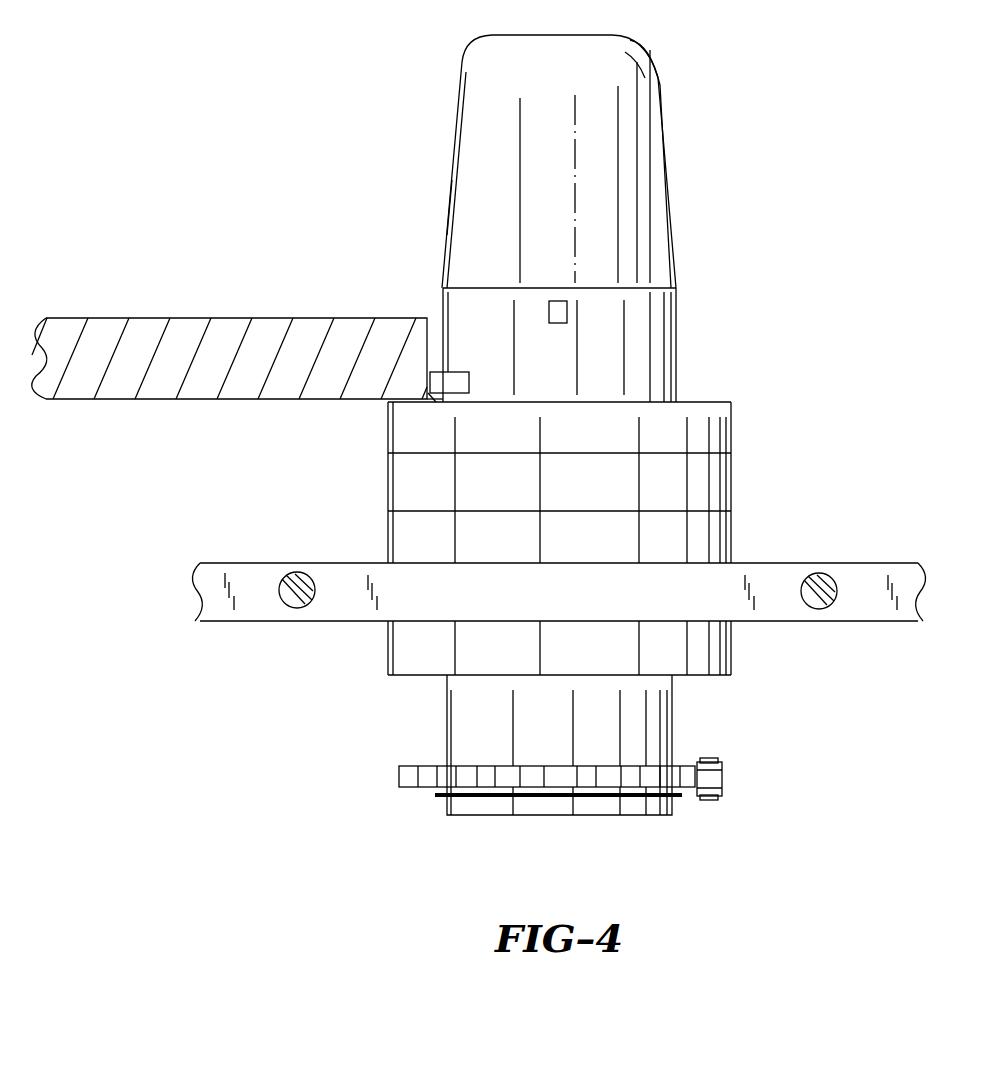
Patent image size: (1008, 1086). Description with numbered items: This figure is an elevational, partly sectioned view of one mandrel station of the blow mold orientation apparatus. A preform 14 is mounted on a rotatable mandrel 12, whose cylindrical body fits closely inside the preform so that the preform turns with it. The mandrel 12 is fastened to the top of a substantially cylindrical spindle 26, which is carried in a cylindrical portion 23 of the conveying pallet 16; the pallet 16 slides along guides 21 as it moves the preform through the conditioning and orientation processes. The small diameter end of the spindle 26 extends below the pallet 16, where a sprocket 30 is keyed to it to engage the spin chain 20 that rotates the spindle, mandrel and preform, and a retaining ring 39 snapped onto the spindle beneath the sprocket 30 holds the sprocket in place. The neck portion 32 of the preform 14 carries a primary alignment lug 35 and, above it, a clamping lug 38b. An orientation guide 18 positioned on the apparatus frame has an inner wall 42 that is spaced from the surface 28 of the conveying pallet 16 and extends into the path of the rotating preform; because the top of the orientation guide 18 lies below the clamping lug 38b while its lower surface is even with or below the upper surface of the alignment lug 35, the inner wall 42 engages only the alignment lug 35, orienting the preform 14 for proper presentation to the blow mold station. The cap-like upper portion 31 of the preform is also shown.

The rotatable mandrel 12 is at (731, 426).
The preform 14 is at (650, 108).
The conveying pallet 16 is at (868, 608).
The orientation guide 18 is at (232, 318).
The spin chain 20 is at (722, 762).
The guide 21 is at (820, 607).
The cylindrical portion 23 is at (387, 533).
The spindle 26 is at (387, 483).
The surface of conveying pallet 28 is at (800, 563).
The sprocket 30 is at (399, 776).
The cap side wall 31 is at (447, 220).
The neck portion 32 is at (676, 350).
The primary alignment lug 35 is at (428, 397).
The clamping lug 38b is at (567, 312).
The retaining ring 39 is at (435, 797).
The inner wall 42 is at (433, 372).